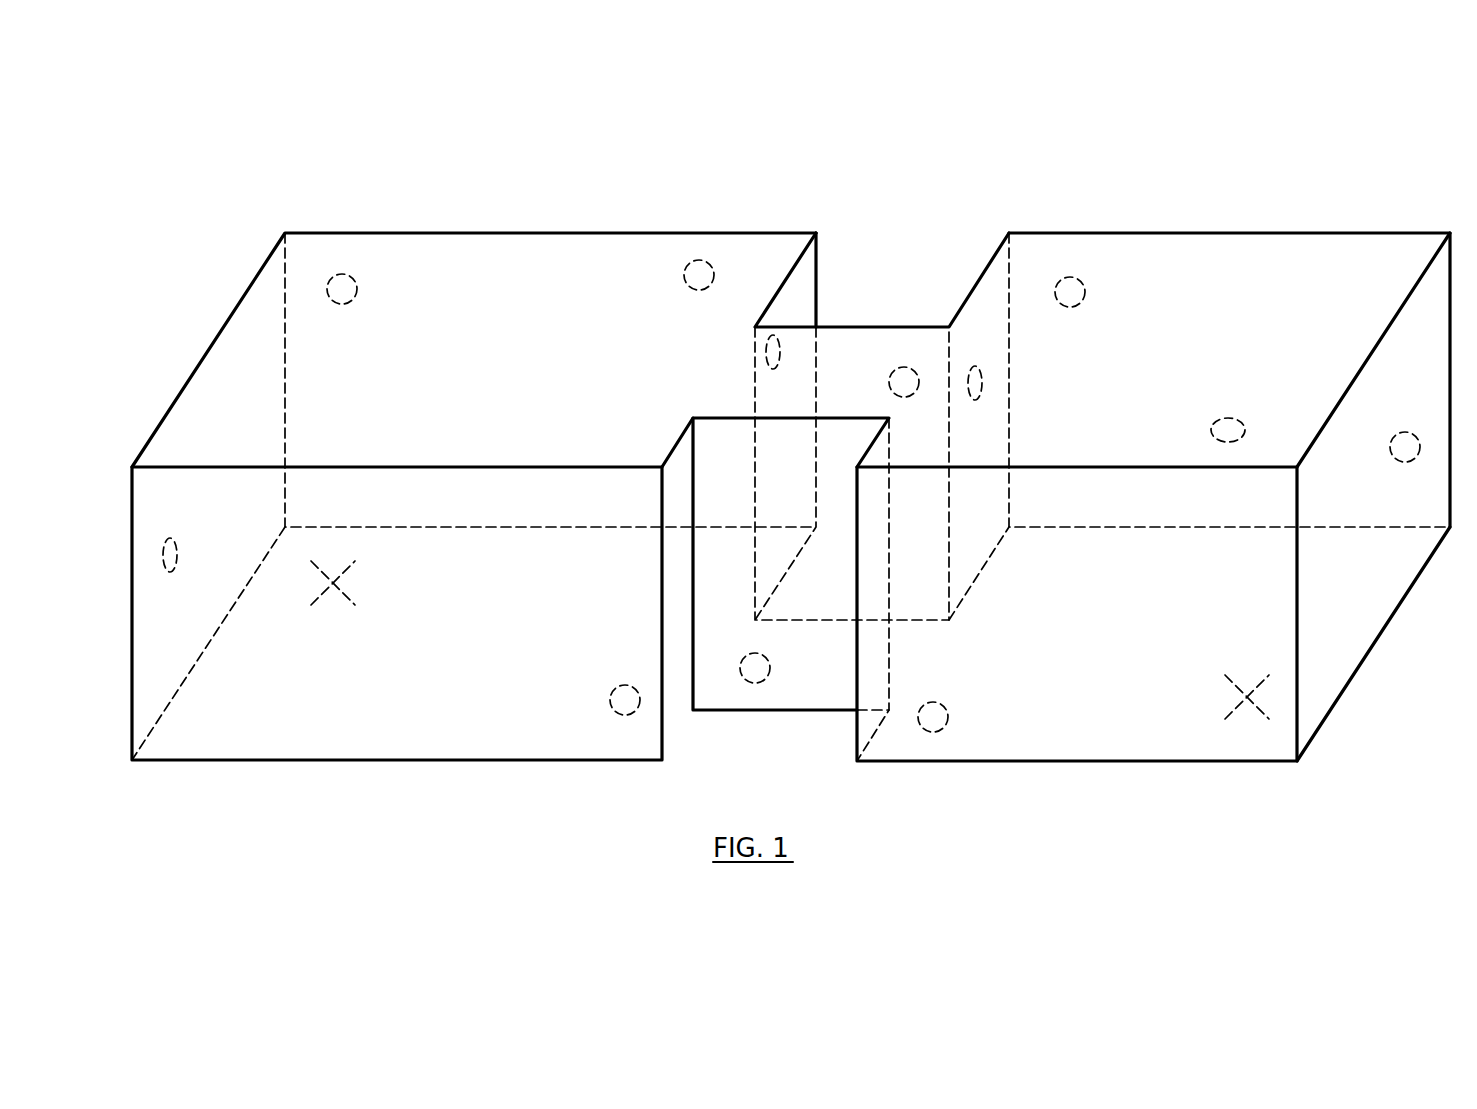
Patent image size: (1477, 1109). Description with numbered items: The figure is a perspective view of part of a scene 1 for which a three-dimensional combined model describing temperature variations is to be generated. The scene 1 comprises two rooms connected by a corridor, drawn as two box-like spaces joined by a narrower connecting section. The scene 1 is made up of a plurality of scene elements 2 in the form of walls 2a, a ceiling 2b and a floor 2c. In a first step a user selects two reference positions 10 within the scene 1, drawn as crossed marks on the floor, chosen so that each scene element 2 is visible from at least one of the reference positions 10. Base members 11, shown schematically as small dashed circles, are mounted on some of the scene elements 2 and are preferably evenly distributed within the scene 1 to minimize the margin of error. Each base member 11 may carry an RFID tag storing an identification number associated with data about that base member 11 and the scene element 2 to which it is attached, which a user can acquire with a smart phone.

The scene 1 is at (895, 208).
The scene elements 2 is at (558, 220).
The walls 2a is at (533, 275).
The ceiling 2b is at (435, 270).
The floor 2c is at (445, 728).
The reference positions 10 is at (345, 590).
The base members 11 is at (340, 290).